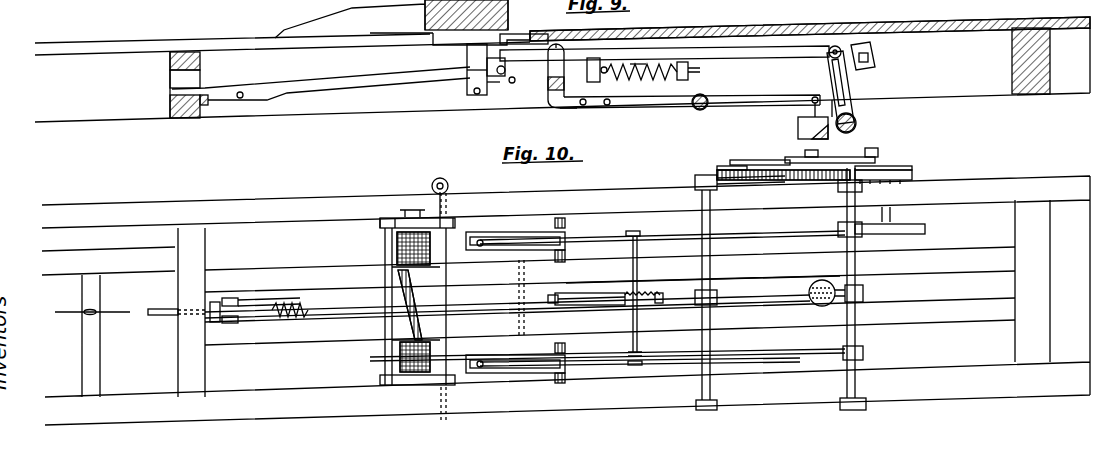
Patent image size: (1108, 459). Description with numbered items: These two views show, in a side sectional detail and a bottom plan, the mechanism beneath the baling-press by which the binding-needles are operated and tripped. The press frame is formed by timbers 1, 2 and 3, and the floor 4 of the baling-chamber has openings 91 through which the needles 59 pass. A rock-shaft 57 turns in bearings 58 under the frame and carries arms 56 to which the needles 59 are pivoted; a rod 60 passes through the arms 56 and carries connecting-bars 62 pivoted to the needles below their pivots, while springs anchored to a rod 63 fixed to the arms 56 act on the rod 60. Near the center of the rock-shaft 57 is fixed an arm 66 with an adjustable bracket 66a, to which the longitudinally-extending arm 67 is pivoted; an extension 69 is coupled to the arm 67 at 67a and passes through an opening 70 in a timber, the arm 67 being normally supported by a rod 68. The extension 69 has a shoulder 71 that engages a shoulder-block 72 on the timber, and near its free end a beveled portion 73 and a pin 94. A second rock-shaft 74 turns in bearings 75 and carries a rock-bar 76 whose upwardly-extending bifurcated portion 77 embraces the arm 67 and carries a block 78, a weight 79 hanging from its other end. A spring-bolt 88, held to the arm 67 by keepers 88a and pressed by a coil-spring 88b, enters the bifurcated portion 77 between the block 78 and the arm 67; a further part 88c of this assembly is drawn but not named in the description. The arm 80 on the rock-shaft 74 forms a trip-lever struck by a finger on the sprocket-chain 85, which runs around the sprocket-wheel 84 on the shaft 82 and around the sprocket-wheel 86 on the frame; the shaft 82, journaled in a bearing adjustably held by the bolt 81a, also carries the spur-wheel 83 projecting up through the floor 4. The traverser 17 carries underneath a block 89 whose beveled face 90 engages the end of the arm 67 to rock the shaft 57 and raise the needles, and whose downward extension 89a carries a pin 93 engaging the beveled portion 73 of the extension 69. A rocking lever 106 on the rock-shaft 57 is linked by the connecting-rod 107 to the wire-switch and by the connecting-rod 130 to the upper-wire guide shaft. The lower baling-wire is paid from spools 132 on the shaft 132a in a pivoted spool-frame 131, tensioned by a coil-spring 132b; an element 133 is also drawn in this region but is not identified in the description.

In FIG. 10, the frame 1 is at (566, 300).
In FIG. 9, the frame 2 is at (203, 61).
In FIG. 10, the frame 2 is at (614, 298).
In FIG. 9, the frame 3 is at (980, 61).
In FIG. 10, the frame 3 is at (950, 290).
In FIG. 9, the floor 4 is at (692, 30).
In FIG. 10, the floor 4 is at (950, 351).
In FIG. 9, the traverser 17 is at (402, 22).
In FIG. 10, the arms 56 is at (658, 298).
In FIG. 9, the rock-shaft 57 is at (857, 123).
In FIG. 10, the rock-shaft 57 is at (858, 280).
In FIG. 10, the bearings 58 is at (866, 402).
In FIG. 10, the needles 59 is at (500, 232).
In FIG. 10, the rod 60 is at (638, 272).
In FIG. 10, the connecting-bars 62 is at (586, 241).
In FIG. 10, the rod 63 is at (736, 270).
In FIG. 9, the arm 66 is at (856, 78).
In FIG. 9, the adjustable bracket 66a is at (876, 56).
In FIG. 9, the longitudinally-extending arm 67 is at (754, 58).
In FIG. 10, the longitudinally-extending arm 67 is at (560, 304).
In FIG. 9, the coupling 67a is at (506, 70).
In FIG. 9, the rod 68 is at (504, 87).
In FIG. 10, the rod 68 is at (550, 306).
In FIG. 9, the extension 69 is at (384, 78).
In FIG. 10, the extension 69 is at (165, 316).
In FIG. 9, the opening 70 is at (185, 79).
In FIG. 9, the shoulder 71 is at (184, 116).
In FIG. 9, the shoulder-block 72 is at (204, 106).
In FIG. 9, the beveled portion 73 is at (285, 96).
In FIG. 9, the rock-shaft 74 is at (706, 98).
In FIG. 10, the rock-shaft 74 is at (711, 222).
In FIG. 10, the bearings 75 is at (695, 183).
In FIG. 9, the rock-bar 76 is at (658, 108).
In FIG. 10, the rock-bar 76 is at (756, 303).
In FIG. 9, the bifurcated portion 77 is at (555, 104).
In FIG. 10, the bifurcated portion 77 is at (598, 293).
In FIG. 9, the block 78 is at (548, 90).
In FIG. 10, the block 78 is at (570, 293).
In FIG. 9, the weight 79 is at (815, 118).
In FIG. 10, the weight 79 is at (822, 306).
In FIG. 10, the arm 80 is at (747, 170).
In FIG. 10, the bolt 81a is at (740, 165).
In FIG. 10, the shaft 82 is at (893, 212).
In FIG. 10, the spur-wheel 83 is at (900, 234).
In FIG. 10, the sprocket-wheel 84 is at (898, 182).
In FIG. 10, the sprocket-chain 85 is at (910, 168).
In FIG. 10, the sprocket-wheel 86 is at (795, 181).
In FIG. 9, the spring-bolt 88 is at (642, 79).
In FIG. 9, the keepers 88a is at (594, 82).
In FIG. 9, the coil-spring 88b is at (656, 80).
In FIG. 9, the spring seat 88c is at (686, 80).
In FIG. 9, the block 89 is at (480, 69).
In FIG. 10, the block 89 is at (236, 316).
In FIG. 9, the downward extension 89a is at (468, 84).
In FIG. 9, the engaging face 90 is at (522, 34).
In FIG. 10, the openings 91 is at (500, 303).
In FIG. 9, the pin 93 is at (470, 97).
In FIG. 10, the pin 93 is at (236, 300).
In FIG. 9, the pin 94 is at (240, 99).
In FIG. 10, the pin 94 is at (216, 322).
In FIG. 10, the rocking lever 106 is at (820, 157).
In FIG. 10, the connecting-rod 107 is at (878, 157).
In FIG. 10, the connecting-rod 130 is at (750, 160).
In FIG. 10, the spool-frame 131 is at (392, 245).
In FIG. 10, the spools 132 is at (392, 292).
In FIG. 10, the shaft 132a is at (420, 290).
In FIG. 10, the coil-spring 132b is at (424, 320).
In FIG. 10, the spring 133 is at (307, 312).